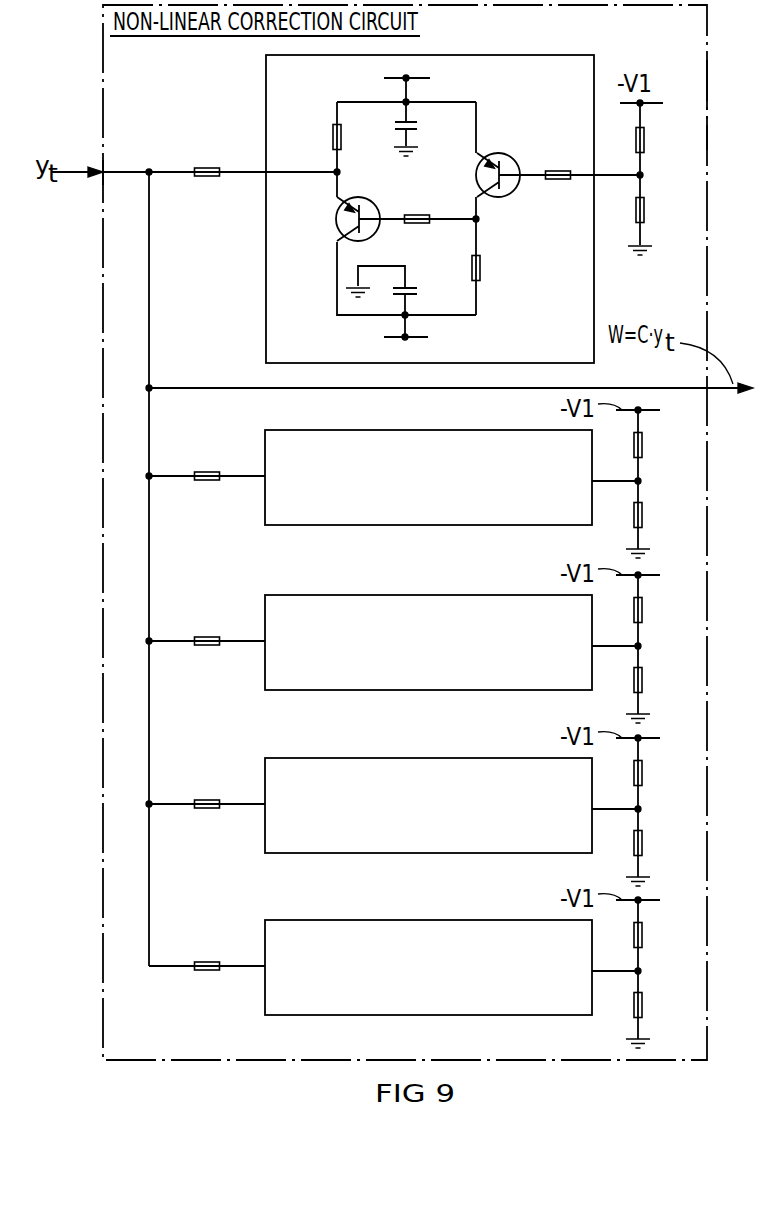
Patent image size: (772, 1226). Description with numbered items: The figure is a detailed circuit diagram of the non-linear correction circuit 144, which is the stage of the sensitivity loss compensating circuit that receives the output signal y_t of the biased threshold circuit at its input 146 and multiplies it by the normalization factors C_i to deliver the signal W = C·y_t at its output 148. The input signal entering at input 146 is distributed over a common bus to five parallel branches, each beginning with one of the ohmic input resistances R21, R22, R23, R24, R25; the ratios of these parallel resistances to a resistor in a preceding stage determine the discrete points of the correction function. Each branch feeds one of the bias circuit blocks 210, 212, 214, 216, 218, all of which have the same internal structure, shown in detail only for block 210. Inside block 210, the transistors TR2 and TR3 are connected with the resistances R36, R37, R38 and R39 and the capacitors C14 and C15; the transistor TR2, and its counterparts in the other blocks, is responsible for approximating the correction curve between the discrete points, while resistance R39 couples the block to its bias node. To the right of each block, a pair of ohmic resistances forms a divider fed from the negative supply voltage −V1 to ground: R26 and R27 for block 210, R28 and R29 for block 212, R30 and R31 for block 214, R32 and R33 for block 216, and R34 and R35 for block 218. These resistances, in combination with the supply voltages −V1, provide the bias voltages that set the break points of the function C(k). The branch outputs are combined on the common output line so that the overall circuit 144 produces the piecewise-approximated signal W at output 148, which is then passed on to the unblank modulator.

The non-linear correction circuit 144 is at (706, 108).
The input 146 is at (100, 175).
The output 148 is at (704, 393).
The bias circuit 210 is at (530, 48).
The bias circuit 212 is at (390, 445).
The bias circuit 214 is at (390, 610).
The bias circuit 216 is at (390, 773).
The bias circuit 218 is at (390, 935).
The resistor R21 is at (209, 167).
The resistor R22 is at (209, 471).
The resistor R23 is at (209, 636).
The resistor R24 is at (209, 799).
The resistor R25 is at (209, 961).
The resistor R26 is at (644, 140).
The resistor R27 is at (644, 210).
The resistor R28 is at (642, 445).
The resistor R29 is at (642, 515).
The resistor R30 is at (642, 610).
The resistor R31 is at (642, 680).
The resistor R32 is at (642, 773).
The resistor R33 is at (642, 843).
The resistor R34 is at (642, 935).
The resistor R35 is at (642, 1005).
The resistor R36 is at (341, 137).
The resistor R37 is at (417, 224).
The resistor R38 is at (480, 268).
The resistor R39 is at (558, 170).
The capacitor C14 is at (425, 129).
The capacitor C15 is at (410, 287).
The transistor TR2 is at (337, 219).
The transistor TR3 is at (476, 175).